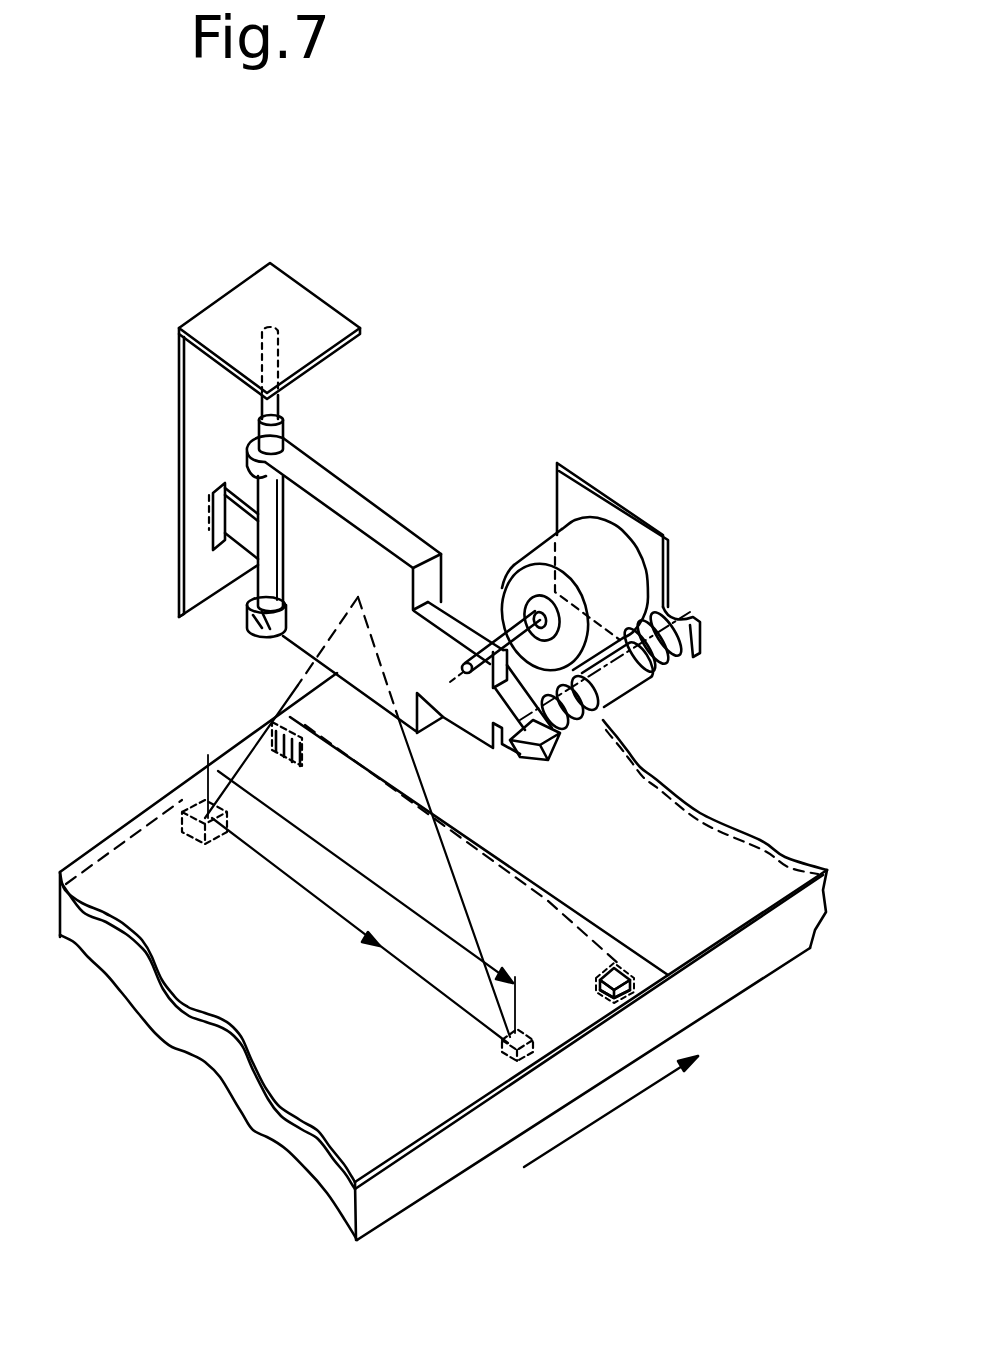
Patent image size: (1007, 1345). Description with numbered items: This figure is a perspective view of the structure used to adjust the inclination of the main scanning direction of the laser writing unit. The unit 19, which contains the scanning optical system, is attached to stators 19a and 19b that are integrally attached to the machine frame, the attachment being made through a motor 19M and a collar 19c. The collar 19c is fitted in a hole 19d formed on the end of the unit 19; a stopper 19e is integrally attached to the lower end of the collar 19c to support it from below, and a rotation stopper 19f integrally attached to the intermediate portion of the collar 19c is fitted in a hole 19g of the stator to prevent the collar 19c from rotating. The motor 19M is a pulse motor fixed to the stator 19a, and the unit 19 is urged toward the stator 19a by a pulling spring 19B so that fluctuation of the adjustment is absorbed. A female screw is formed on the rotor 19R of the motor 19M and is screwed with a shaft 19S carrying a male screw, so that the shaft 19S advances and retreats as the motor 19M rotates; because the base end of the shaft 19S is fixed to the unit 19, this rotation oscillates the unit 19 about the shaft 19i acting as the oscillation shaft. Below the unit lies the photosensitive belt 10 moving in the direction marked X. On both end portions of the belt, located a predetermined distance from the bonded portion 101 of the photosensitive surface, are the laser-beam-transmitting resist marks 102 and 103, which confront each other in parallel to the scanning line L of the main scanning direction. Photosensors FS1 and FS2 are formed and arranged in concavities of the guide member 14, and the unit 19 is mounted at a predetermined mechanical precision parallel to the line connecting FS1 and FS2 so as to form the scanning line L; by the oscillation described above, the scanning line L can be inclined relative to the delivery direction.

The photosensitive belt 10 is at (90, 852).
The unit 19 is at (363, 493).
The stator 19a is at (620, 503).
The stator 19b is at (205, 307).
The collar 19c is at (273, 437).
The hole 19d is at (288, 446).
The stopper 19e is at (250, 633).
The rotation stopper 19f is at (245, 538).
The hole of the stator 19g is at (213, 490).
The shaft 19i is at (274, 407).
The rotor 19R is at (507, 570).
The motor 19M is at (520, 557).
The shaft 19S is at (493, 645).
The pulling spring 19B is at (630, 706).
The bonded portion 101 is at (648, 962).
The resist mark 102 is at (273, 731).
The resist mark 103 is at (623, 996).
The guide member 14 is at (690, 985).
The photosensor FS1 is at (182, 794).
The photosensor FS2 is at (527, 1033).
The scanning line L is at (359, 820).
The scanning direction X is at (611, 1111).